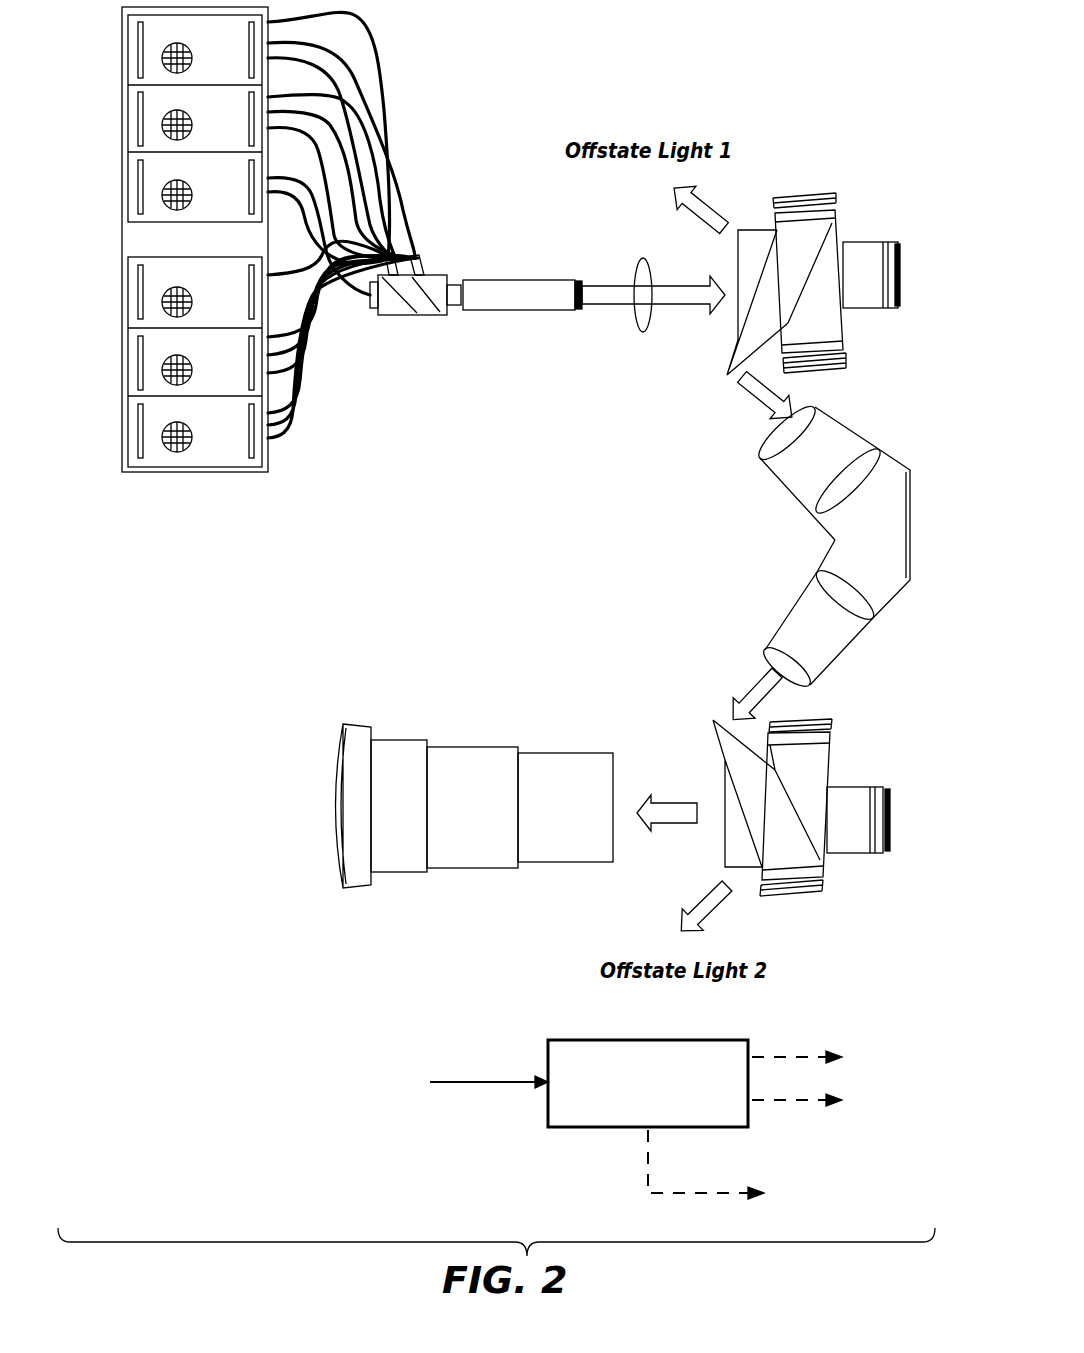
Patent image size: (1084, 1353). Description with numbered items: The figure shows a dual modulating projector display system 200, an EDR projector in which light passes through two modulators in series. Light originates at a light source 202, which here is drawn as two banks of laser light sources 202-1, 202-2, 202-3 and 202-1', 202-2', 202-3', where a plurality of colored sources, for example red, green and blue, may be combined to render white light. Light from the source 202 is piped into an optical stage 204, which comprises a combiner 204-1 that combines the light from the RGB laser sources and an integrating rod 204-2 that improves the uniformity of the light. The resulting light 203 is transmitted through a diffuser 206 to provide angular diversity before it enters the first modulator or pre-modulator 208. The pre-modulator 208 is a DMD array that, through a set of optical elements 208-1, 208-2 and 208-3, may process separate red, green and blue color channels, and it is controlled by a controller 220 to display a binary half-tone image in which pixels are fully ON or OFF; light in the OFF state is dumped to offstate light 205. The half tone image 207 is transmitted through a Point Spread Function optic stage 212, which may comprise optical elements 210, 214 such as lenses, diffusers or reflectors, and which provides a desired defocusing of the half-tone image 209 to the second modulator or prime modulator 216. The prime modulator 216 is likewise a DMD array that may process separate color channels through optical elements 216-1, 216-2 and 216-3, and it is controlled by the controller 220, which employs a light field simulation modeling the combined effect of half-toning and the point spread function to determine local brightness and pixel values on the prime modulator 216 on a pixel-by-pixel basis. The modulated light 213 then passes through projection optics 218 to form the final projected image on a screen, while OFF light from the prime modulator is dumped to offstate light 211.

The dual modulating projector display system 200 is at (630, 36).
The light source 202 is at (268, 485).
The laser light source 202-1 is at (149, 294).
The laser light source 202-2 is at (153, 361).
The laser light source 202-3 is at (153, 433).
The laser light source 202-1' is at (149, 50).
The laser light source 202-2' is at (153, 115).
The laser light source 202-3' is at (153, 183).
The light 203 is at (620, 284).
The optical stage 204 is at (575, 325).
The combiner 204-1 is at (440, 275).
The integrating rod 204-2 is at (527, 280).
The offstate light 205 is at (710, 200).
The diffuser 206 is at (643, 332).
The half tone image 207 is at (742, 405).
The first modulator/pre-modulator 208 is at (902, 197).
The optical element for color channel 208-1 is at (787, 196).
The optical element for color channel 208-2 is at (902, 250).
The optical element for color channel 208-3 is at (818, 373).
The defocused half-tone image light 209 is at (733, 706).
The optical element 210 is at (817, 527).
The offstate light 211 is at (684, 918).
The Point Spread Function optic stage 212 is at (915, 427).
The light 213 is at (688, 803).
The optical element 214 is at (883, 618).
The second modulator/prime modulator 216 is at (913, 727).
The optical element for color channel 216-1 is at (828, 736).
The optical element for color channel 216-2 is at (874, 856).
The optical element for color channel 216-3 is at (772, 900).
The projection optics 218 is at (412, 740).
The controller 220 is at (692, 1040).